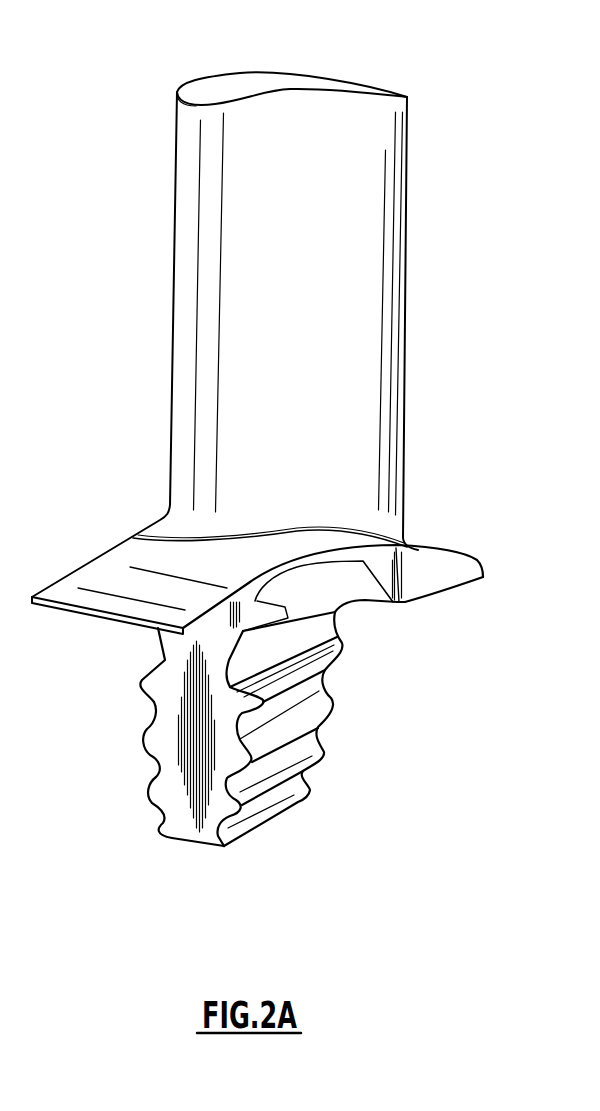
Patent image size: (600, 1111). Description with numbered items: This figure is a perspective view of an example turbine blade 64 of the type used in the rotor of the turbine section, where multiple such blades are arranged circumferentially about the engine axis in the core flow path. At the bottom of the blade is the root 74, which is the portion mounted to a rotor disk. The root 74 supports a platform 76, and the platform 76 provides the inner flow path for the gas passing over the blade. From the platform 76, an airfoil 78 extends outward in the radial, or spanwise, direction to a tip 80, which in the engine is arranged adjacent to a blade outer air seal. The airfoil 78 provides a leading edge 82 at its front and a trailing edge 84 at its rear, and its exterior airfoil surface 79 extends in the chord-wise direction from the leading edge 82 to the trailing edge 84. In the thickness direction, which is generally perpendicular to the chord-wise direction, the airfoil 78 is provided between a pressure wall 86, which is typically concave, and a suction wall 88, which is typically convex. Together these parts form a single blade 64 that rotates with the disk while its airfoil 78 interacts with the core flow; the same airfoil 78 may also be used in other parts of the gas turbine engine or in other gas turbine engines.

The turbine blade 64 is at (142, 270).
The root 74 is at (185, 738).
The platform 76 is at (297, 545).
The airfoil 78 is at (342, 415).
The exterior airfoil surface 79 is at (367, 456).
The tip 80 is at (197, 82).
The leading edge 82 is at (174, 264).
The trailing edge 84 is at (408, 253).
The pressure wall 86 is at (320, 319).
The suction wall 88 is at (322, 72).